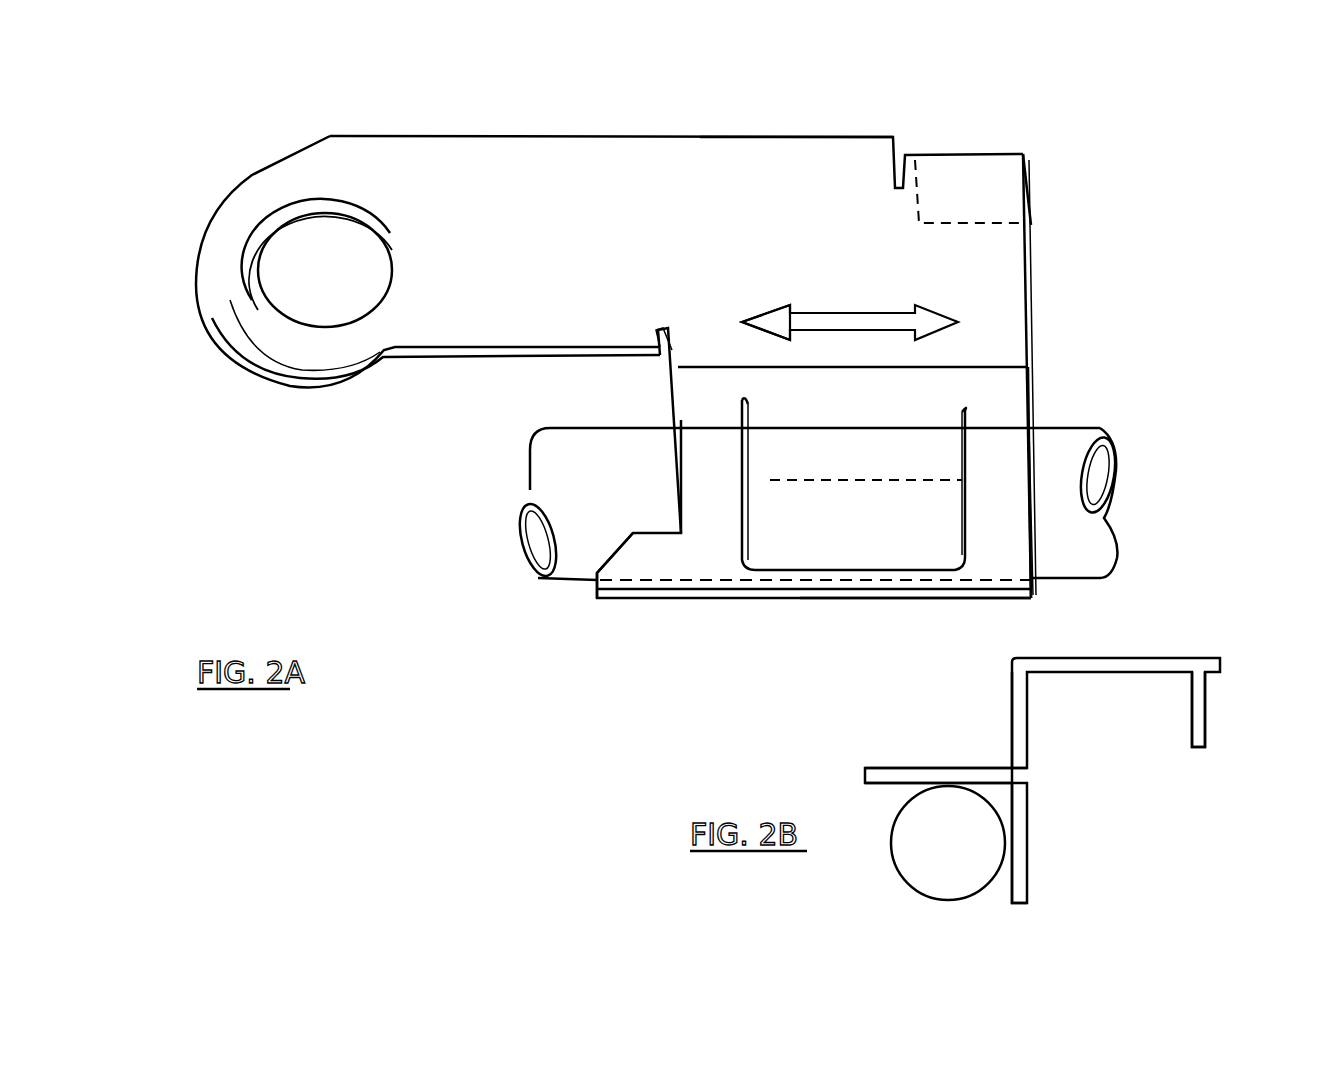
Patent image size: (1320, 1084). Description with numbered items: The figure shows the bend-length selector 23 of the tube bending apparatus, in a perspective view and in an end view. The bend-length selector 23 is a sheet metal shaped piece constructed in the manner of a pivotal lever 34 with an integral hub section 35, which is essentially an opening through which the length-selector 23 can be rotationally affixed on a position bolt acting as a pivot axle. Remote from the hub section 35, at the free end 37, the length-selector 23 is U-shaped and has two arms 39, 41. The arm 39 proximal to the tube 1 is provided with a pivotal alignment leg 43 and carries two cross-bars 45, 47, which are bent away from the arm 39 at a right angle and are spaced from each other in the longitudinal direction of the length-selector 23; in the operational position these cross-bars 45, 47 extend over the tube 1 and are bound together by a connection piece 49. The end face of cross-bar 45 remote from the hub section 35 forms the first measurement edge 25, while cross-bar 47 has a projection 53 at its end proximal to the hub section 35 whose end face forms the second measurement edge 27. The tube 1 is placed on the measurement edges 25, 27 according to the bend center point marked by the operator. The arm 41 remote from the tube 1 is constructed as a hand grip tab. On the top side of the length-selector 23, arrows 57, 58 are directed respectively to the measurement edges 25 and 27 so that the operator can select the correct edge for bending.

In FIG. 2A, the tube 1 is at (615, 495).
In FIG. 2A, the bend-length selector 23 is at (440, 431).
In FIG. 2B, the bend-length selector 23 is at (1176, 644).
In FIG. 2A, the first measurement edge 25 is at (1040, 456).
In FIG. 2B, the first measurement edge 25 is at (940, 778).
In FIG. 2A, the second measurement edge 27 is at (592, 584).
In FIG. 2A, the pivotal lever 34 is at (563, 243).
In FIG. 2A, the hub section 35 is at (238, 218).
In FIG. 2A, the free end 37 is at (803, 170).
In FIG. 2A, the arm 39 is at (1010, 381).
In FIG. 2B, the arm 39 is at (1022, 730).
In FIG. 2A, the arm 41 is at (1040, 207).
In FIG. 2B, the arm 41 is at (1205, 728).
In FIG. 2A, the pivotal alignment leg 43 is at (880, 468).
In FIG. 2B, the pivotal alignment leg 43 is at (1027, 848).
In FIG. 2A, the cross-bar 45 is at (1018, 526).
In FIG. 2B, the cross-bar 45 is at (980, 767).
In FIG. 2A, the cross-bar 47 is at (712, 516).
In FIG. 2A, the connection piece 49 is at (833, 583).
In FIG. 2A, the projection 53 is at (643, 566).
In FIG. 2A, the arrow 57 is at (935, 321).
In FIG. 2A, the arrow 58 is at (772, 322).